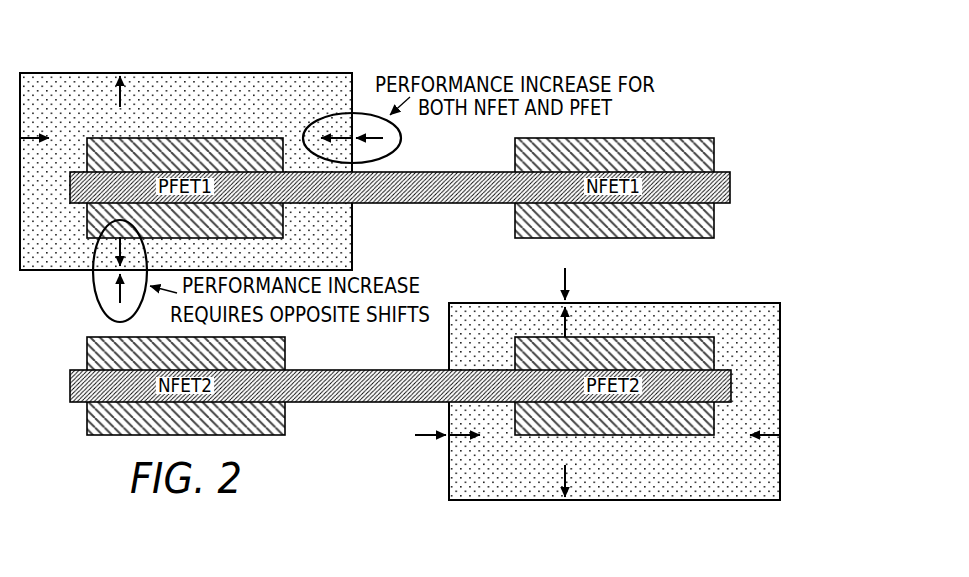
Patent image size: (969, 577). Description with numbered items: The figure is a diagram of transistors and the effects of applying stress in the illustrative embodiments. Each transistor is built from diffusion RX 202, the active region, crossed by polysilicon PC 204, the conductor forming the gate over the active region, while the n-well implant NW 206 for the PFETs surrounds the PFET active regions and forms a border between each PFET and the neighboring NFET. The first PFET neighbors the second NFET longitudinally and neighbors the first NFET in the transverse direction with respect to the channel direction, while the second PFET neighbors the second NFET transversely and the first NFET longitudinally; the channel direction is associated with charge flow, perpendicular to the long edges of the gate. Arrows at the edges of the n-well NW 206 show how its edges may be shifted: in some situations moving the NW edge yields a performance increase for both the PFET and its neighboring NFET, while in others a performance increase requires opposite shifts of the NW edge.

The RX diffusion 202 is at (645, 137).
The PC polysilicon 204 is at (460, 171).
The NW n-well implant 206 is at (500, 303).
The diffusion active region RX is at (633, 158).
The polysilicon gate conductor PC is at (417, 155).
The n-well NW is at (635, 371).